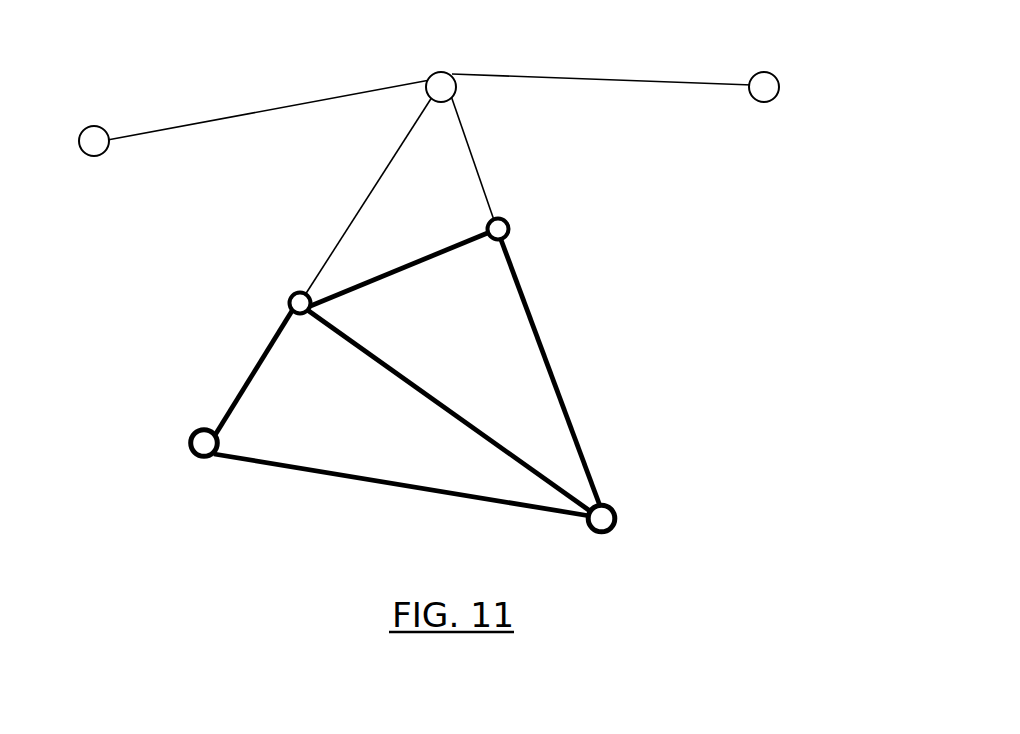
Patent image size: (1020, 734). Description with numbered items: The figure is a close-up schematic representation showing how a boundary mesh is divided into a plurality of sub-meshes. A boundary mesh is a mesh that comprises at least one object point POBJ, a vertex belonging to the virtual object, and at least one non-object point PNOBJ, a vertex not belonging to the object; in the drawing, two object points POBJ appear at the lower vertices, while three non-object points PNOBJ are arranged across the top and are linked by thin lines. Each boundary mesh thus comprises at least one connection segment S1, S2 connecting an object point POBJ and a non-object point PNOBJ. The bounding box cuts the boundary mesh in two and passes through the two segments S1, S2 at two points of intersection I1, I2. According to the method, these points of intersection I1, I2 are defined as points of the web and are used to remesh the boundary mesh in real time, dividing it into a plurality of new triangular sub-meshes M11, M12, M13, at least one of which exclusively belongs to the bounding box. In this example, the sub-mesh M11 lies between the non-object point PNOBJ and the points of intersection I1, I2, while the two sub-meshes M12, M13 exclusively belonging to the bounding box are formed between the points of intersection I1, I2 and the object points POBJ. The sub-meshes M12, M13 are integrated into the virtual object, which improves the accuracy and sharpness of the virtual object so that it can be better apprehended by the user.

The non-object point PNOBJ is at (427, 92).
The object point POBJ is at (419, 494).
The point of intersection I1 is at (288, 289).
The point of intersection I2 is at (504, 213).
The connection segment S1 is at (327, 252).
The connection segment S2 is at (522, 298).
The sub-mesh M11 is at (399, 243).
The sub-mesh M12 is at (453, 374).
The sub-mesh M13 is at (401, 411).